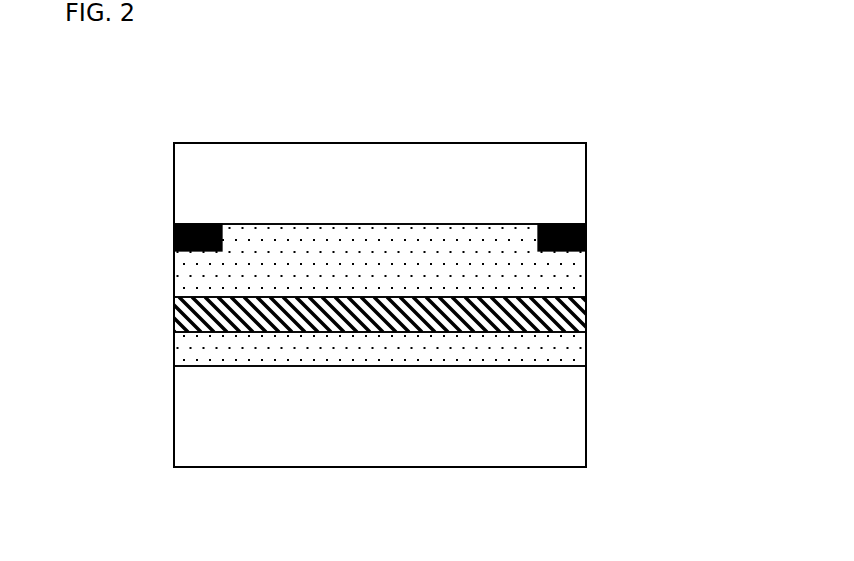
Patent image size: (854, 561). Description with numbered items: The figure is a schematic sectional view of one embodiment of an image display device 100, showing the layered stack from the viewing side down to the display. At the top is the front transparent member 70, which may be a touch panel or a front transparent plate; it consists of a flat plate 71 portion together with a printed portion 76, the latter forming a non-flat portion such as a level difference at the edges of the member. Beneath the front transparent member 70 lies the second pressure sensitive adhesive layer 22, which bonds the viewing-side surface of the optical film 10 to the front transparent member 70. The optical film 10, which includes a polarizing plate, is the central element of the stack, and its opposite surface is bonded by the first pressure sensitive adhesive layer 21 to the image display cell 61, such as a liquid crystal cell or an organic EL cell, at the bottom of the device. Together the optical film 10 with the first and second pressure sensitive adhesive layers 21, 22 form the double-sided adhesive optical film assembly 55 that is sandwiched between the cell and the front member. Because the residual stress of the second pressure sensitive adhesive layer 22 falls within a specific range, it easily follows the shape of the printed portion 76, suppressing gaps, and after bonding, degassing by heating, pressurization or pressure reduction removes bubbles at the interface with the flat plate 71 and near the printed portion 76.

The image display device 100 is at (557, 117).
The front transparent member 70 is at (448, 197).
The flat plate 71 is at (578, 173).
The printed portion 76 is at (586, 230).
The cell laminate 55 is at (436, 295).
The second pressure sensitive adhesive layer 22 is at (577, 263).
The optical film 10 is at (577, 307).
The first pressure sensitive adhesive layer 21 is at (428, 349).
The image display cell 61 is at (392, 459).